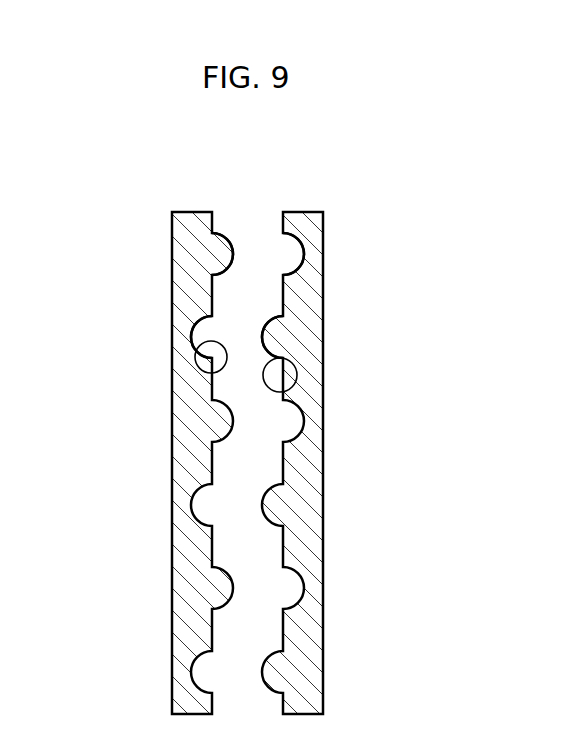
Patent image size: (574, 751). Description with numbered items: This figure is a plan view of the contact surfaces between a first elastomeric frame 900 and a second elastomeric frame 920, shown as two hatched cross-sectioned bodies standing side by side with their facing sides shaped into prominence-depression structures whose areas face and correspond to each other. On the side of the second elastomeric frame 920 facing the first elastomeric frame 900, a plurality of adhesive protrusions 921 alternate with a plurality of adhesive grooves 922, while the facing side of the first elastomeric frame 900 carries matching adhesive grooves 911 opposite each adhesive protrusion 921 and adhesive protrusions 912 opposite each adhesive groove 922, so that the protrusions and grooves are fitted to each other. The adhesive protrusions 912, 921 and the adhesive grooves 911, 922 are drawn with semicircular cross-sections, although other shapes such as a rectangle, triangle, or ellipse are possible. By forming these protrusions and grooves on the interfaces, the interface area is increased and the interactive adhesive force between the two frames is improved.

The first elastomeric frame 900 is at (315, 308).
The adhesive groove 911 is at (305, 252).
The adhesive protrusion 912 is at (283, 395).
The second elastomeric frame 920 is at (195, 292).
The adhesive protrusion 921 is at (233, 243).
The adhesive groove 922 is at (218, 366).